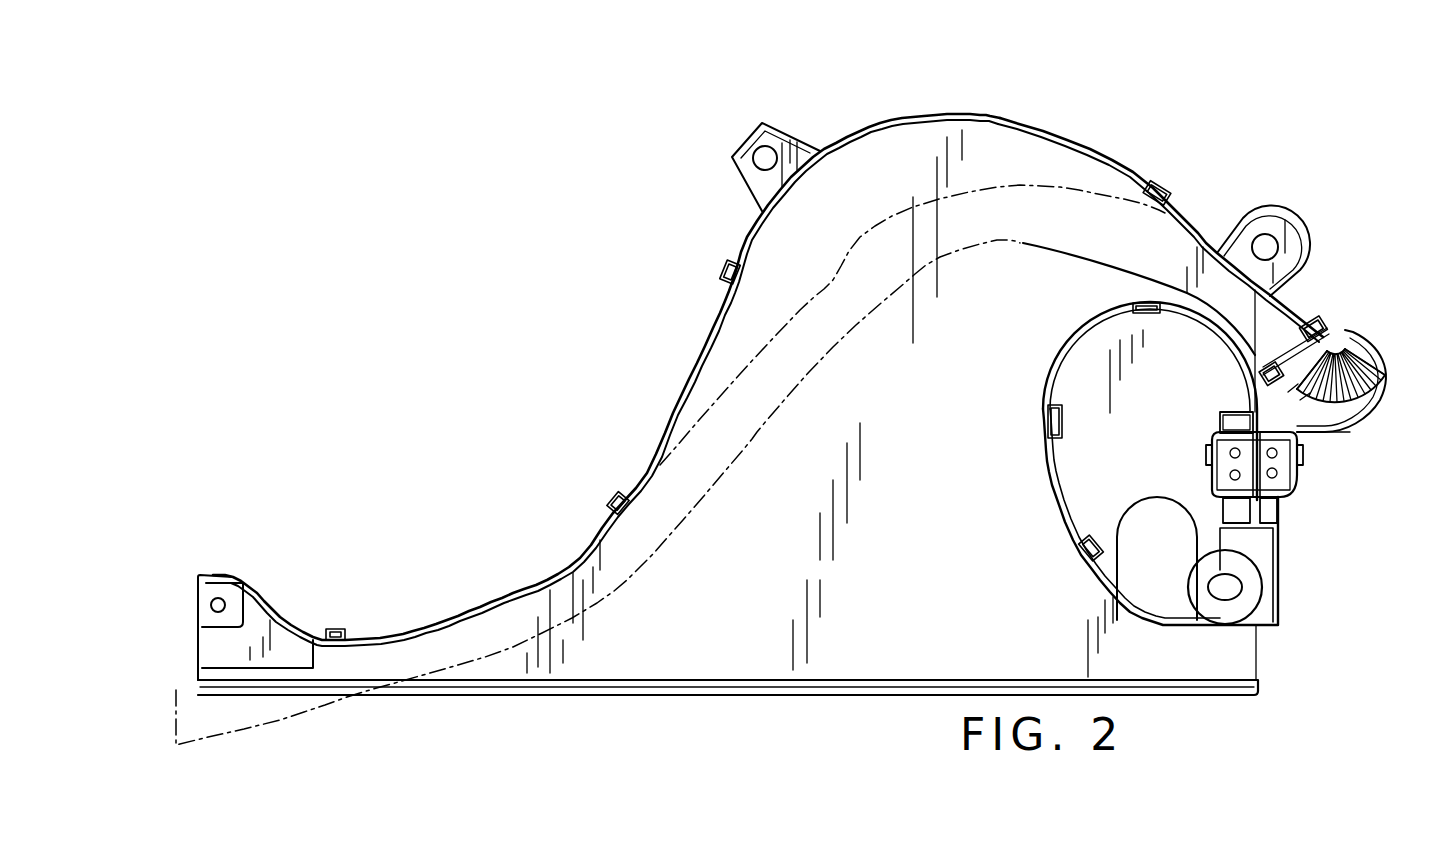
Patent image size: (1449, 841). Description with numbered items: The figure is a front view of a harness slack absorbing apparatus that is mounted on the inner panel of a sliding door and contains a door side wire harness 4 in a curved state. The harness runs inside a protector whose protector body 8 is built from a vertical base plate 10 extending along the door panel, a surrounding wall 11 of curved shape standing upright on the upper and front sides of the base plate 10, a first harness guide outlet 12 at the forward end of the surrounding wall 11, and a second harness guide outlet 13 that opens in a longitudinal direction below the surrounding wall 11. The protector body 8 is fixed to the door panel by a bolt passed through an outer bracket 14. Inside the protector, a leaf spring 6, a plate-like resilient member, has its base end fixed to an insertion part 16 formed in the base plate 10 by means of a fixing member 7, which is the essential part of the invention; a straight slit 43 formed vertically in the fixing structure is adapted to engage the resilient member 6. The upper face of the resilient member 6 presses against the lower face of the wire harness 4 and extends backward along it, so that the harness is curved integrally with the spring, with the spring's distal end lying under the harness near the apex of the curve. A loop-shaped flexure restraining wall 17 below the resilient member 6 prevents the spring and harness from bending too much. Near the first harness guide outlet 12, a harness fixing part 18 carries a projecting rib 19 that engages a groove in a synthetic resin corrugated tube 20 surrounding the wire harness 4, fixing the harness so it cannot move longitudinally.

The door side wire harness 4 is at (820, 288).
The leaf spring 6 is at (1083, 253).
The fixing member 7 is at (1227, 482).
The protector body 8 is at (868, 130).
The vertical base plate 10 is at (898, 527).
The surrounding wall 11 is at (1090, 150).
The first harness guide outlet 12 is at (1348, 405).
The second harness guide outlet 13 is at (737, 688).
The outer bracket 14 is at (790, 140).
The insertion part 16 is at (1237, 413).
The flexure restraining wall 17 is at (1048, 384).
The harness fixing part 18 is at (1295, 391).
The projecting rib 19 is at (1330, 333).
The corrugated tube 20 is at (1293, 297).
The straight slit 43 is at (1212, 453).